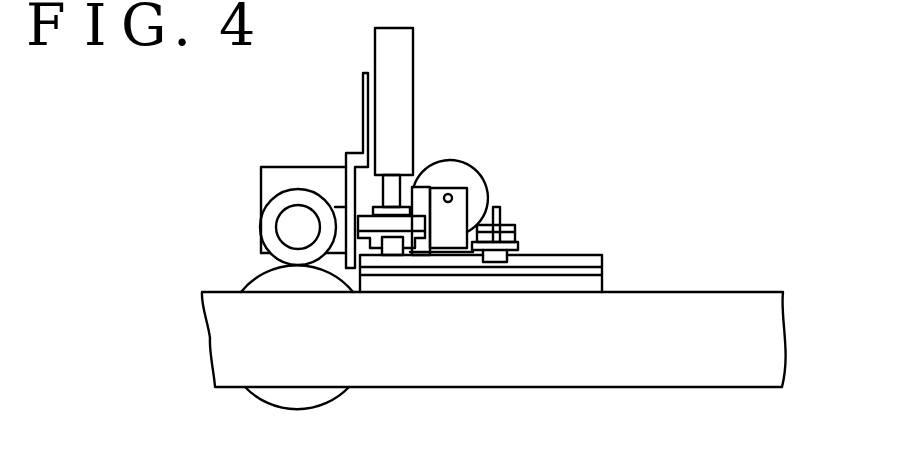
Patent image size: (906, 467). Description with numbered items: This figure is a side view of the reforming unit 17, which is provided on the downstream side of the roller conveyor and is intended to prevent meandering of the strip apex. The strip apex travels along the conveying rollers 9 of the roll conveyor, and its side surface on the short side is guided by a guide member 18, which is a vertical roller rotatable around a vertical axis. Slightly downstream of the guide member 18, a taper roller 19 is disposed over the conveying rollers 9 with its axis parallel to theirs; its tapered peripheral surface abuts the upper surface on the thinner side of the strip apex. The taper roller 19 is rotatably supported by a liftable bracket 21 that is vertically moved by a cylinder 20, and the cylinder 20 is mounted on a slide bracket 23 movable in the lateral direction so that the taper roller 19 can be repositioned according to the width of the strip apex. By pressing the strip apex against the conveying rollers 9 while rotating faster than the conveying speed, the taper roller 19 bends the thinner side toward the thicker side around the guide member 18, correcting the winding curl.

The conveying roller 9 is at (298, 410).
The reforming unit 17 is at (540, 177).
The guide member 18 is at (512, 242).
The taper roller 19 is at (268, 217).
The cylinder 20 is at (405, 50).
The liftable bracket 21 is at (348, 154).
The slide bracket 23 is at (373, 227).